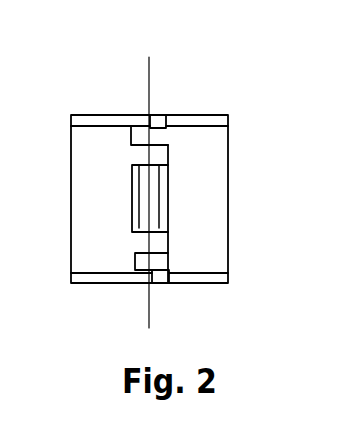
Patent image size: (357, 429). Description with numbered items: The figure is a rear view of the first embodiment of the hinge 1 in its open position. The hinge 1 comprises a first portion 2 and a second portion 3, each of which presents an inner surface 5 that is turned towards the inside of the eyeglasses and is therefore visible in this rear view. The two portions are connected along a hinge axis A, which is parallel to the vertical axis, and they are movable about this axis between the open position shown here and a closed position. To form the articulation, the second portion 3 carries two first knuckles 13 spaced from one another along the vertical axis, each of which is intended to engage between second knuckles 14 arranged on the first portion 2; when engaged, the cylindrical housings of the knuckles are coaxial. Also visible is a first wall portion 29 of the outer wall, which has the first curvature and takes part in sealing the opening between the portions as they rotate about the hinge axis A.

The sleeve body 1 is at (199, 89).
The first portion 2 is at (97, 112).
The second portion 3 is at (206, 112).
The inner surface 5 is at (204, 250).
The first knuckles 13 is at (152, 137).
The second knuckles 14 is at (158, 122).
The first wall portion 29 is at (149, 197).
The hinge axis A is at (149, 68).